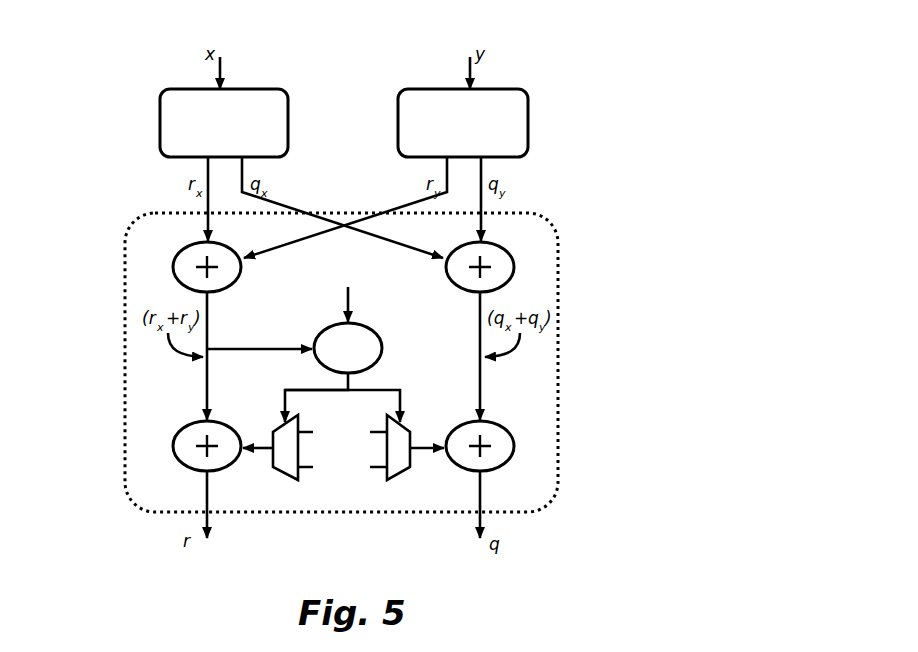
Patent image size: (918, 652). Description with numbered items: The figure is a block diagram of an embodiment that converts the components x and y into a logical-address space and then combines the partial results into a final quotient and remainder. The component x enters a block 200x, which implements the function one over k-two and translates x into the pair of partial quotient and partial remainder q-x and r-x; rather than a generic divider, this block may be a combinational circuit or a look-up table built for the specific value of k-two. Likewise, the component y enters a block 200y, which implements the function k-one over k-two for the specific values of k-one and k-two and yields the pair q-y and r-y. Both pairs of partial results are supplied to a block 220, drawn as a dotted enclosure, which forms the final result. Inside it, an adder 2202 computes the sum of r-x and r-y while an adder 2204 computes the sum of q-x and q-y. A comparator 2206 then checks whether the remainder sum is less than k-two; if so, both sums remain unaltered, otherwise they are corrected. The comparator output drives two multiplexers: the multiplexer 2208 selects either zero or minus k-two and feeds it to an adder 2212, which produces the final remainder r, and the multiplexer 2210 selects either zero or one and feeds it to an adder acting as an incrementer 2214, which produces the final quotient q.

The block 200x is at (279, 89).
The block 200y is at (519, 89).
The block 220 is at (550, 224).
The adder 2202 is at (176, 262).
The adder 2204 is at (512, 259).
The comparator 2206 is at (376, 328).
The multiplexer 2208 is at (283, 471).
The multiplexer 2210 is at (402, 471).
The adder 2212 is at (176, 438).
The adder (incrementer) 2214 is at (512, 432).